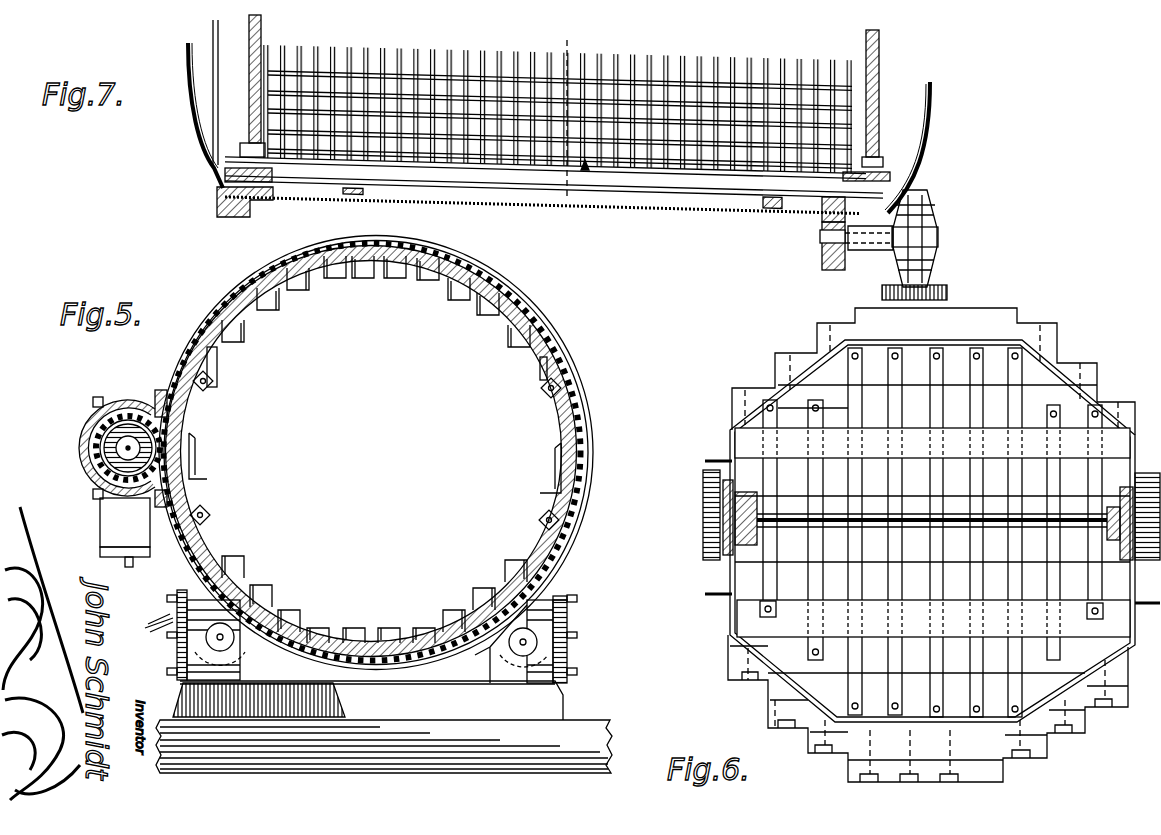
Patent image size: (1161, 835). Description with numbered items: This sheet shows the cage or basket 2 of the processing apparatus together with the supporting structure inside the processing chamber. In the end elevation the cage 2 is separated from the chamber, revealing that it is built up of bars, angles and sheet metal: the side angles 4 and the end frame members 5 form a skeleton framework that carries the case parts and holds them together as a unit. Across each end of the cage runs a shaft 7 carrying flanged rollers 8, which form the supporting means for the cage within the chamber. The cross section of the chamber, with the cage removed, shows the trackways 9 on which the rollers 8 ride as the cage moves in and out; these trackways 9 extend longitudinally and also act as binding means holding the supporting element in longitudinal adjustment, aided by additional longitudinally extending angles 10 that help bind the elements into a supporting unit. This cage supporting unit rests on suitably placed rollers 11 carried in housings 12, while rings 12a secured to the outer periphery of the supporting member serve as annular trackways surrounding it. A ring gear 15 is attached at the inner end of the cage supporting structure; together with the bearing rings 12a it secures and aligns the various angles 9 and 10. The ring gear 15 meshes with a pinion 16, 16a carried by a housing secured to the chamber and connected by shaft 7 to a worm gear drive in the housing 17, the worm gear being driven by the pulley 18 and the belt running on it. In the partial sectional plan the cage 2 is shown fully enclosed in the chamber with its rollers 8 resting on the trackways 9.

In FIG. 7, the cage or basket 2 is at (585, 166).
In FIG. 6, the cage or basket 2 is at (727, 580).
In FIG. 6, the side angles 4 is at (727, 437).
In FIG. 7, the end frame members 5 is at (278, 50).
In FIG. 6, the end frame members 5 is at (743, 653).
In FIG. 7, the shaft 7 is at (257, 98).
In FIG. 6, the shaft 7 is at (903, 518).
In FIG. 7, the flanged rollers 8 is at (230, 177).
In FIG. 6, the flanged rollers 8 is at (712, 521).
In FIG. 7, the trackways 9 is at (522, 175).
In FIG. 5, the trackways 9 is at (197, 477).
In FIG. 5, the longitudinally extending angles 10 is at (330, 279).
In FIG. 5, the rollers 11 is at (257, 670).
In FIG. 5, the leaf spring 12 is at (578, 587).
In FIG. 7, the rings 12a is at (742, 208).
In FIG. 7, the ring gear 15 is at (843, 203).
In FIG. 5, the ring gear 15 is at (176, 423).
In FIG. 5, the pinion 16 is at (101, 464).
In FIG. 6, the pinion 16 is at (890, 549).
In FIG. 7, the pinion 16a is at (846, 252).
In FIG. 7, the housing 17 is at (912, 224).
In FIG. 7, the pulley 18 is at (930, 291).